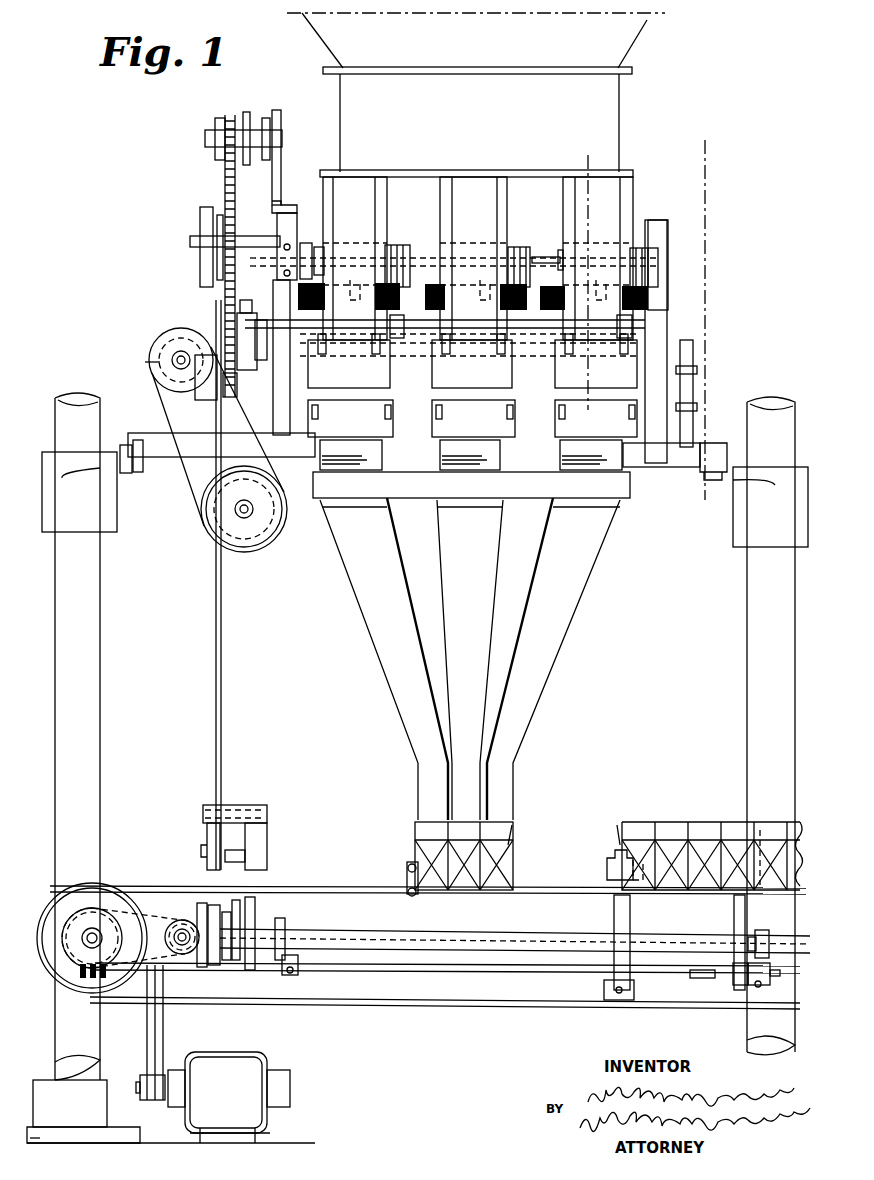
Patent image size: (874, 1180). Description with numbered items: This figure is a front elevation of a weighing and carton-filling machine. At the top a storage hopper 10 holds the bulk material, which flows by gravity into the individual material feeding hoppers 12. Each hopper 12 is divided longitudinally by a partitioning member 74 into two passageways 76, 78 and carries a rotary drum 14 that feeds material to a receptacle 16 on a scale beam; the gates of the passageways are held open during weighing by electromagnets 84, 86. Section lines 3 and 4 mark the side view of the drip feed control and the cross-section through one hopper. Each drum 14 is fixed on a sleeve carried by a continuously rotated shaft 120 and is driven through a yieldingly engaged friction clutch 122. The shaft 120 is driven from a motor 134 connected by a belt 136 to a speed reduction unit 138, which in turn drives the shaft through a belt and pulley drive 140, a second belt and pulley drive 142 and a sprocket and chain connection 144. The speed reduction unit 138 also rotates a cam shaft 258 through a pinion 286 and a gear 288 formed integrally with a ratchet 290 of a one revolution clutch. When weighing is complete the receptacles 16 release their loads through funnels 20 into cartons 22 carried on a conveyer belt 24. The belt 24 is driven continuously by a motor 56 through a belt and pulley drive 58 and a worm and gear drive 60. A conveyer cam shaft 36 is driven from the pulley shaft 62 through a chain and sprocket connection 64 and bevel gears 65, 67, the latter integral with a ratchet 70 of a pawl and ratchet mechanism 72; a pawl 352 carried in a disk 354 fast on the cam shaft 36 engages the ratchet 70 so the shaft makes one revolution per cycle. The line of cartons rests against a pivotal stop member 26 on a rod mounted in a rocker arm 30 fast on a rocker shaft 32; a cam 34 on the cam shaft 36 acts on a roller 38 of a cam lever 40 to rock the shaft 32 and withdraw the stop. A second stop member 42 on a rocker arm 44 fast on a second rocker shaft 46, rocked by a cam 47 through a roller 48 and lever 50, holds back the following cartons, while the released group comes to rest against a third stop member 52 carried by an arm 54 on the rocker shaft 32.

The storage hopper 10 is at (612, 85).
The material feeding hopper 12 is at (362, 190).
The rotary drum 14 is at (345, 243).
The receptacle 16 is at (330, 425).
The funnel 20 is at (418, 786).
The carton 22 is at (510, 856).
The conveyer belt 24 is at (334, 885).
The pivotal stop member 26 is at (606, 872).
The rocker arm 30 is at (612, 928).
The rocker shaft 32 is at (562, 975).
The cam 34 is at (286, 922).
The cam shaft 36 is at (358, 940).
The roller 38 is at (270, 968).
The cam lever 40 is at (296, 970).
The second stop member 42 is at (760, 830).
The rocker arm 44 is at (732, 926).
The second rocker shaft 46 is at (728, 975).
The cam 47 is at (768, 930).
The roller 48 is at (740, 990).
The lever 50 is at (752, 990).
The third stop member 52 is at (406, 866).
The arm 54 is at (438, 905).
The motor 56 is at (276, 1066).
The belt and pulley drive 58 is at (162, 1020).
The worm and gear drive 60 is at (78, 974).
The pulley shaft 62 is at (113, 890).
The chain and sprocket connection 64 is at (148, 890).
The bevel gear 65 is at (198, 966).
The bevel gear 67 is at (208, 980).
The ratchet 70 is at (214, 964).
The pawl and ratchet driving mechanism 72 is at (190, 892).
The partitioning member 74 is at (479, 286).
The passageway 76 is at (330, 396).
The passageway 78 is at (356, 384).
The electromagnet 84 is at (300, 242).
The electromagnet 86 is at (418, 283).
The continuously rotated shaft 120 is at (558, 255).
The friction clutch 122 is at (408, 244).
The motor 134 is at (258, 548).
The belt 136 is at (198, 472).
The speed reduction unit 138 is at (152, 342).
The belt and pulley drive 140 is at (237, 292).
The second belt and pulley drive 142 is at (268, 178).
The sprocket and chain connection 144 is at (224, 184).
The cam shaft 258 is at (258, 358).
The pinion 286 is at (232, 396).
The gear 288 is at (218, 318).
The ratchet 290 is at (205, 298).
The pawl 352 is at (263, 870).
The disk 354 is at (252, 888).
The section line 3— 3 is at (693, 135).
The section line 4— 4 is at (563, 147).